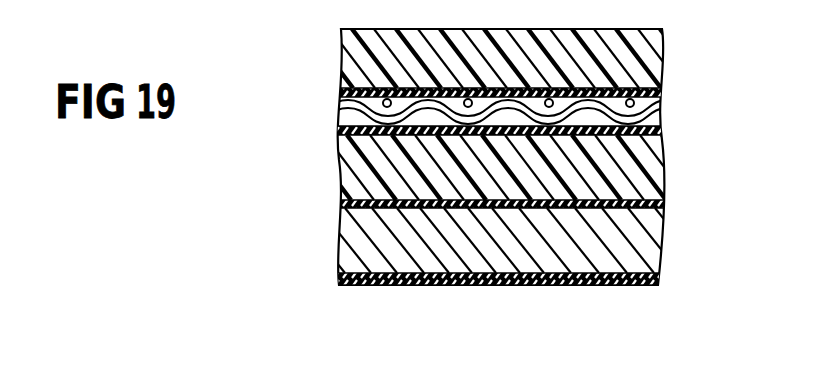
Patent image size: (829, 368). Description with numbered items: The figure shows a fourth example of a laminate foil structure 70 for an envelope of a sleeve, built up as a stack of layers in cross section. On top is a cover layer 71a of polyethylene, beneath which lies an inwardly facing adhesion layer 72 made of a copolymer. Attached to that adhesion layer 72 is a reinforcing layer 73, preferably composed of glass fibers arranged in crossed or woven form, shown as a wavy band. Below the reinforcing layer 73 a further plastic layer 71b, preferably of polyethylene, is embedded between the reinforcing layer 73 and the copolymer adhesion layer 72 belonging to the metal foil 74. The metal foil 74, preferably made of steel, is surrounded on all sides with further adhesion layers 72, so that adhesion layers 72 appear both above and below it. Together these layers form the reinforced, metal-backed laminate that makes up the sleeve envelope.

The laminated composite structure 70 is at (320, 23).
The first core layer 71a is at (657, 50).
The further plastic layer 71b is at (660, 178).
The adhesion layer 72 is at (662, 90).
The reinforcing layer 73 is at (665, 118).
The metal foil 74 is at (648, 238).